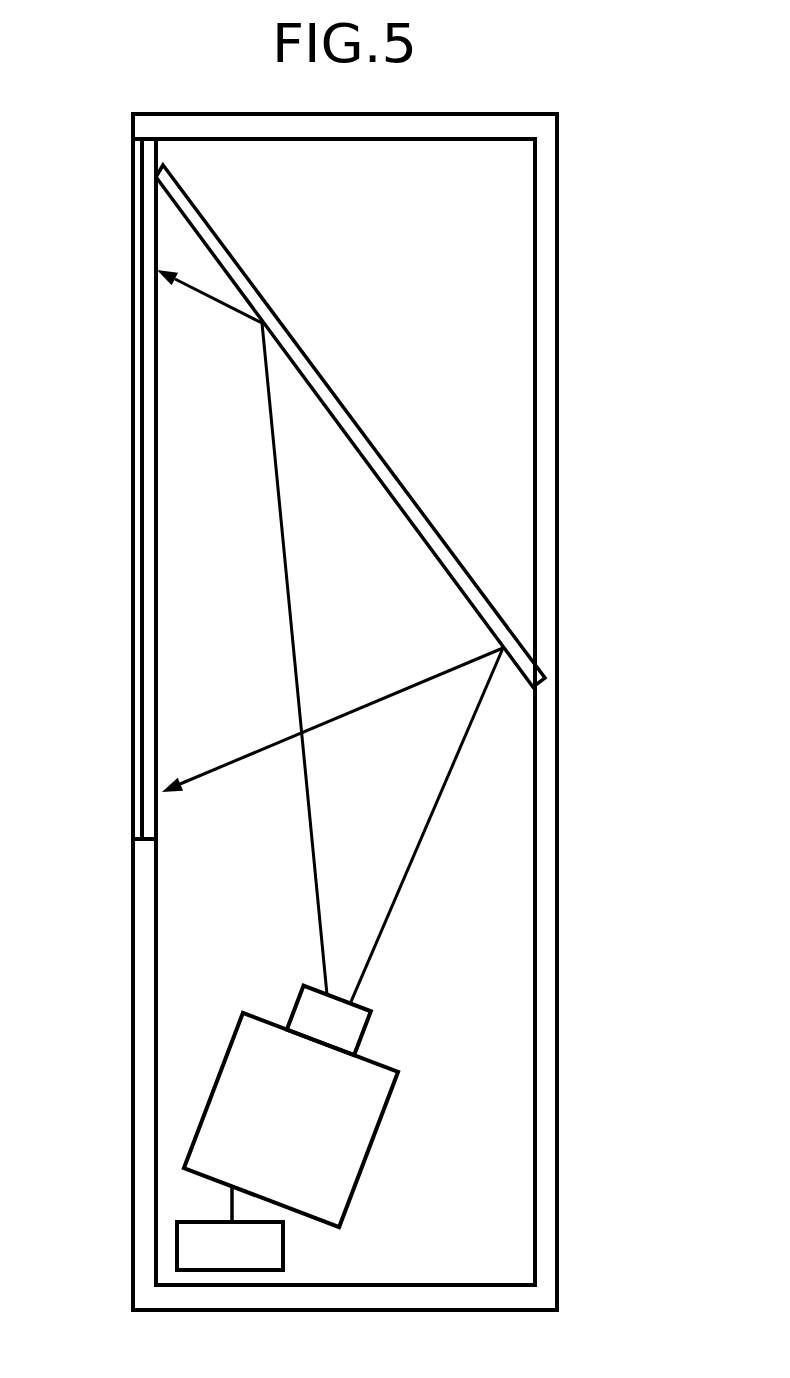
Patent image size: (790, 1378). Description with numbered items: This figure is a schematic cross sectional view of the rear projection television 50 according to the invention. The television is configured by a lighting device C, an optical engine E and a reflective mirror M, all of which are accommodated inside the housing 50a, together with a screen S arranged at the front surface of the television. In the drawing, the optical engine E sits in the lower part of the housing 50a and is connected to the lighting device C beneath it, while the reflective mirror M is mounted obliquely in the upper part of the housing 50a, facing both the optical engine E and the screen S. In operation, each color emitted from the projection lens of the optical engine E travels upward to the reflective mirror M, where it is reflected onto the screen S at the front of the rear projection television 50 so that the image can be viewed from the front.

The rear projection television 50 is at (582, 180).
The housing 50a is at (548, 1023).
The screen S is at (140, 502).
The reflective mirror M is at (345, 408).
The optical engine E is at (342, 1172).
The lighting device C is at (230, 1228).